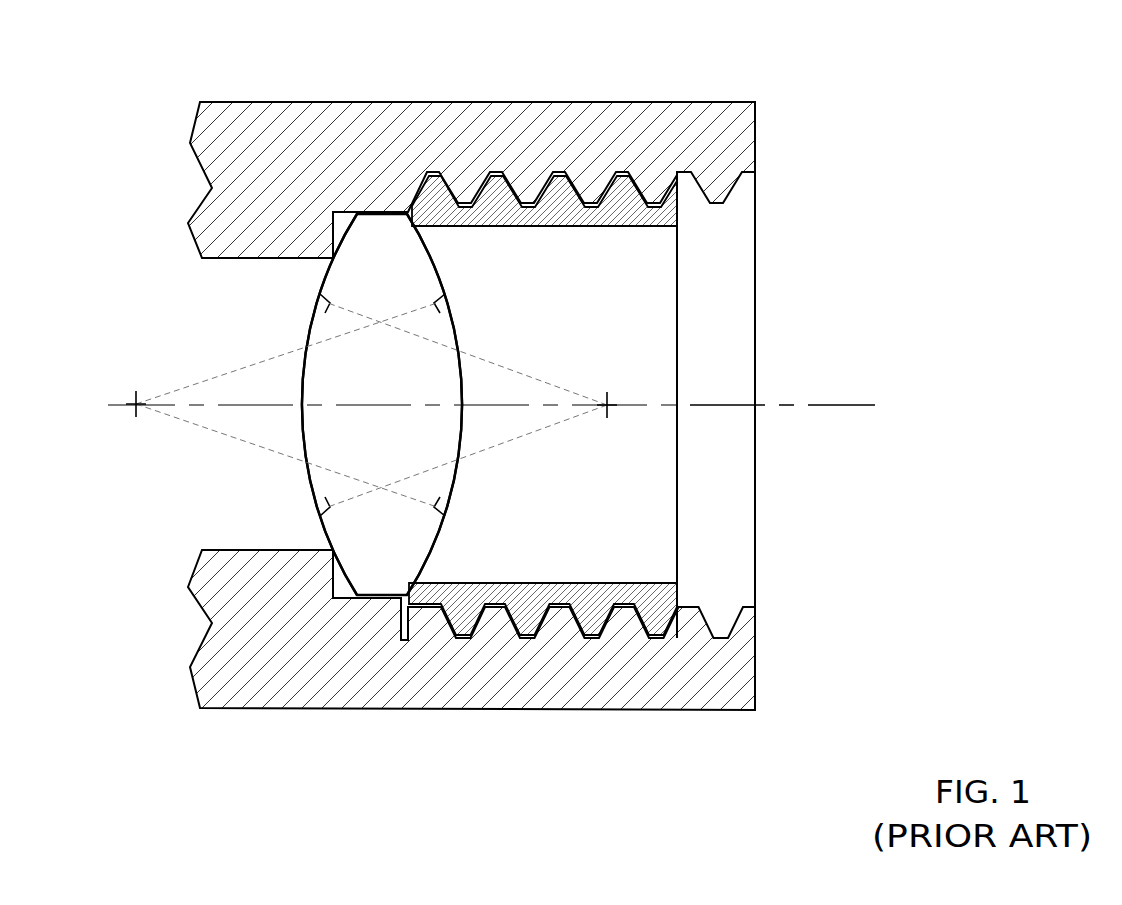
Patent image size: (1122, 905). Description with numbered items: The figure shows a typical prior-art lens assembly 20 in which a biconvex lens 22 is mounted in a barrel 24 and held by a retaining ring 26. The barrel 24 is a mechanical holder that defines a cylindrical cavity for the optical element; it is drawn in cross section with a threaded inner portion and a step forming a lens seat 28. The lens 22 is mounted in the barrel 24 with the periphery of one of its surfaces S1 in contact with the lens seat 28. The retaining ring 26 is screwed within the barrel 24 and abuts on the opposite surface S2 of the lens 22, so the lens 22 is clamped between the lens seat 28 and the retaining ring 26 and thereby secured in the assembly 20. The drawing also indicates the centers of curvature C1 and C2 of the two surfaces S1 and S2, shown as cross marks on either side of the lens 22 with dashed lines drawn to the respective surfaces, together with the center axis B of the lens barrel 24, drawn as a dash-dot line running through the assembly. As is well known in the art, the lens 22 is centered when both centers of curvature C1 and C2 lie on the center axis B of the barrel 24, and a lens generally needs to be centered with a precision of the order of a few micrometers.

The assembly 20 is at (899, 119).
The lens 22 is at (315, 337).
The barrel 24 is at (594, 101).
The retaining ring 26 is at (636, 227).
The lens seat 28 is at (287, 258).
The surface S1 is at (308, 480).
The surface S2 is at (456, 331).
The center of curvature C1 is at (622, 415).
The center of curvature C2 is at (123, 414).
The center axis B is at (840, 405).